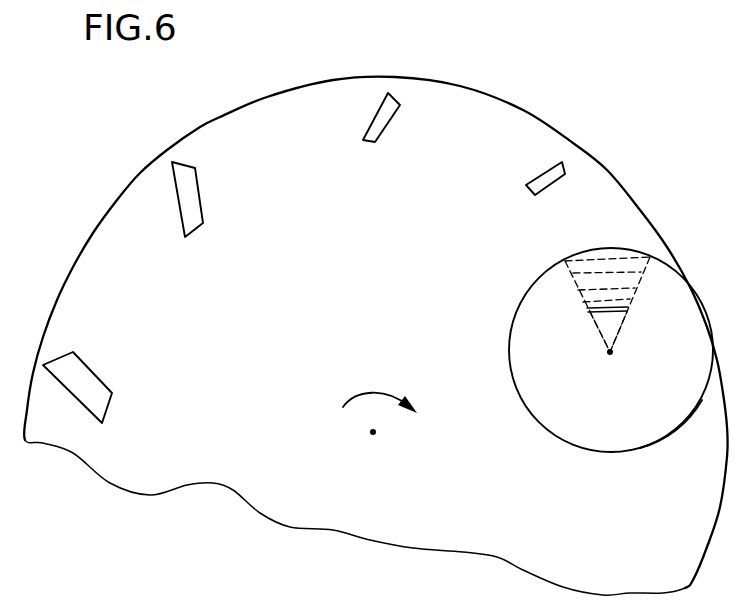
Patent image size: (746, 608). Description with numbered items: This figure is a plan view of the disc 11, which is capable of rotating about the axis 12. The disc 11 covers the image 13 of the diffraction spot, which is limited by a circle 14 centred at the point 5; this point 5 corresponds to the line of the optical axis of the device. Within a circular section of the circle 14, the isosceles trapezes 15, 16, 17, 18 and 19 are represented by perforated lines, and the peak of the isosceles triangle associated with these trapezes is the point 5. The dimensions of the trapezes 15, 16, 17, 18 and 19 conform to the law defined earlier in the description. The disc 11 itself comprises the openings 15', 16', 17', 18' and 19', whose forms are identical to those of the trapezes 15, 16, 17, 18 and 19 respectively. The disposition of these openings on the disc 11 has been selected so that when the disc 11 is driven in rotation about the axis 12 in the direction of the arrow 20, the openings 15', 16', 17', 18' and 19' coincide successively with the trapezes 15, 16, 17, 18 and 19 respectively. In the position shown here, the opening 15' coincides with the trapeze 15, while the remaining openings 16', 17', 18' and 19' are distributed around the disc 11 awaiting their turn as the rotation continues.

The point 5 is at (610, 356).
The disc 11 is at (523, 108).
The axis 12 is at (377, 431).
The image of the diffraction spot 13 is at (563, 430).
The circle 14 is at (668, 433).
The isoceles trapeze 15 is at (637, 332).
The opening 15' is at (638, 318).
The isoceles trapeze 16 is at (572, 306).
The opening 16' is at (523, 182).
The isoceles trapeze 17 is at (581, 302).
The opening 17' is at (370, 137).
The isoceles trapeze 18 is at (651, 304).
The opening 18' is at (191, 222).
The isoceles trapeze 19 is at (573, 260).
The opening 19' is at (108, 387).
The arrow 20 is at (380, 389).